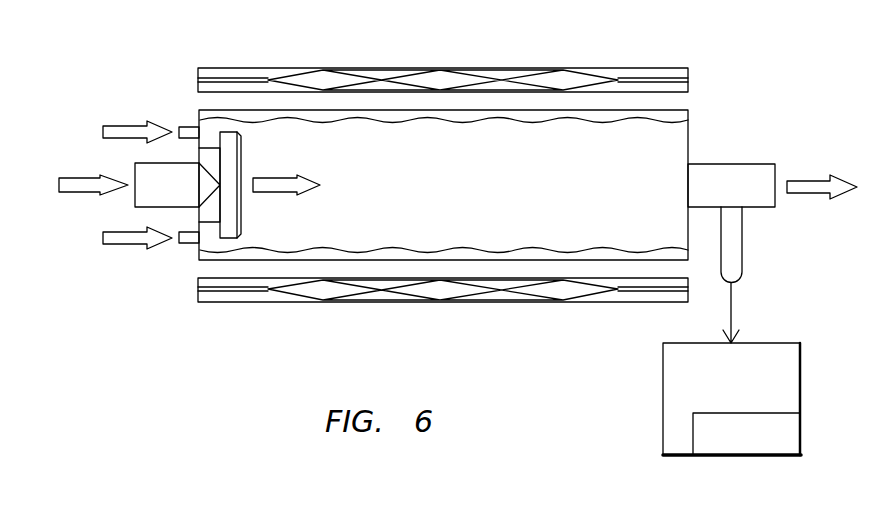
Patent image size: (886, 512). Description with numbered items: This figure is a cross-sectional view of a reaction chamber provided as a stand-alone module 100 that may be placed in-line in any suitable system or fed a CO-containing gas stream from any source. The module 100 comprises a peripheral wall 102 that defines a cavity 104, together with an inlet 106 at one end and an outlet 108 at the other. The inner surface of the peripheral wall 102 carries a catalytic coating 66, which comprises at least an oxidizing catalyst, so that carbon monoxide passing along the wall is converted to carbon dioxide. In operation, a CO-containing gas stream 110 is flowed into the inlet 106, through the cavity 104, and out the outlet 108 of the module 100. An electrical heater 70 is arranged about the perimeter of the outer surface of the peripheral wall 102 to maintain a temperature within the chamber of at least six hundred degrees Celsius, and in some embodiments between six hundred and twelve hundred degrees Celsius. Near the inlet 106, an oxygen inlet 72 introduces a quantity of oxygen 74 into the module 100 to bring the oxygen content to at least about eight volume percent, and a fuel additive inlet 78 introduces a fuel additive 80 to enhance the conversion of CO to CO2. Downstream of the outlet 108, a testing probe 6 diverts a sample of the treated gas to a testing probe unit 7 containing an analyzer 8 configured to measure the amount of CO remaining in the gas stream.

The stand-alone module 100 is at (442, 179).
The peripheral wall 102 is at (463, 146).
The cavity 104 is at (420, 183).
The catalytic coating 66 is at (444, 186).
The electrical heater 70 is at (443, 185).
The oxygen inlet 72 is at (166, 111).
The oxygen 74 is at (99, 117).
The fuel additive inlet 78 is at (166, 260).
The fuel additive 80 is at (99, 270).
The inlet 106 is at (138, 185).
The CO-containing gas stream 110 is at (78, 199).
The outlet 108 is at (772, 166).
The probe 6 is at (757, 275).
The testing probe unit 7 is at (741, 380).
The analyzer 8 is at (756, 456).